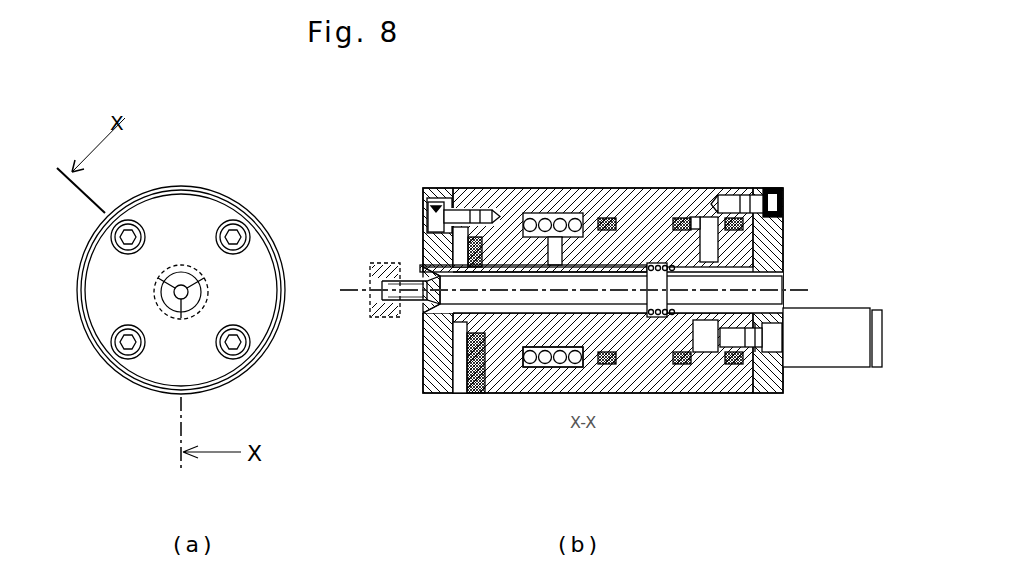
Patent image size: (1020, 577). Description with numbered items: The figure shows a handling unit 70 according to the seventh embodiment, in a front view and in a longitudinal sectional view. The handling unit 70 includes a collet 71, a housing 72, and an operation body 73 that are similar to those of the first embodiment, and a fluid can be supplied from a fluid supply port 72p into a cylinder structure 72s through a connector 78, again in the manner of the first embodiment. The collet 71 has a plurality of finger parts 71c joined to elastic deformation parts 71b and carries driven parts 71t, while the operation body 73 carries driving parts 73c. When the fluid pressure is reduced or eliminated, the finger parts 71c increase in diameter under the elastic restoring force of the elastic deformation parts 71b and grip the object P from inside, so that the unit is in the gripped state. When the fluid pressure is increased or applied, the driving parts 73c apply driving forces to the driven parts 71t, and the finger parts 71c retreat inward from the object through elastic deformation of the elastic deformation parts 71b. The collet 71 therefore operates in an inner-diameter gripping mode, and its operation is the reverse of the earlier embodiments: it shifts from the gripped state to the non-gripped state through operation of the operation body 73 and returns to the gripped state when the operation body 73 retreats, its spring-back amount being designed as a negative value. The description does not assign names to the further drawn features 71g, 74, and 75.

The handling unit 70 is at (374, 98).
The collet 71 is at (462, 252).
The elastic deformation parts 71b is at (514, 266).
The finger parts 71c is at (384, 279).
The groove 71g is at (373, 306).
The driven parts 71t is at (483, 318).
The housing 72 is at (517, 236).
The cylinder structure 72s is at (727, 219).
The fluid supply port 72p is at (773, 348).
The operation body 73 is at (646, 368).
The driving parts 73c is at (440, 282).
The spring 74 is at (543, 368).
The piston 75 is at (650, 262).
The connector 78 is at (827, 350).